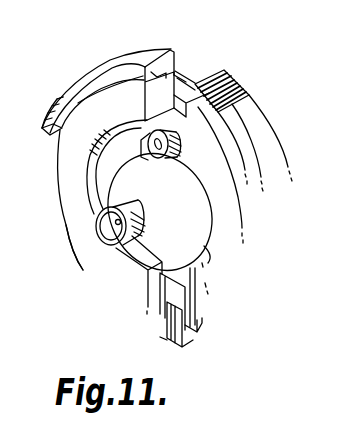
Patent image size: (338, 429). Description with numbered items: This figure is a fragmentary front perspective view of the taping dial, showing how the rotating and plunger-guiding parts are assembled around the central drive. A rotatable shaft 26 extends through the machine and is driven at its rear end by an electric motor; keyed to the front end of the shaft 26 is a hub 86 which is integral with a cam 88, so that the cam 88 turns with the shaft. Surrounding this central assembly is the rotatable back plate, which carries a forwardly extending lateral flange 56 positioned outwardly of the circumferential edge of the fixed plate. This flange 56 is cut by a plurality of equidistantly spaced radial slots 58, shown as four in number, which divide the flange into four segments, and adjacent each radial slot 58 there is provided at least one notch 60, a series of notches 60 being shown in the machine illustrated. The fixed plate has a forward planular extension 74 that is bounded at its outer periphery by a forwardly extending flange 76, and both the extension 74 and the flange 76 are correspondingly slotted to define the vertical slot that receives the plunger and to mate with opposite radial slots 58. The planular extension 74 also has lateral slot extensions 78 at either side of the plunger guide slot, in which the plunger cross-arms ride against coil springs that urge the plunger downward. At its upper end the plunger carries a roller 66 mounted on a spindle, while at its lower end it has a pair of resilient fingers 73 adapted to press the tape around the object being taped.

The rotatable shaft 26 is at (110, 228).
The lateral flange 56 is at (267, 125).
The radial slots 58 is at (198, 74).
The notches 60 is at (227, 82).
The roller 66 is at (163, 156).
The resilient fingers 73 is at (182, 344).
The forward planular extension 74 is at (107, 163).
The forwardly extending flange 76 is at (77, 213).
The lateral slot extensions 78 is at (134, 248).
The hub 86 is at (140, 213).
The cam 88 is at (208, 263).